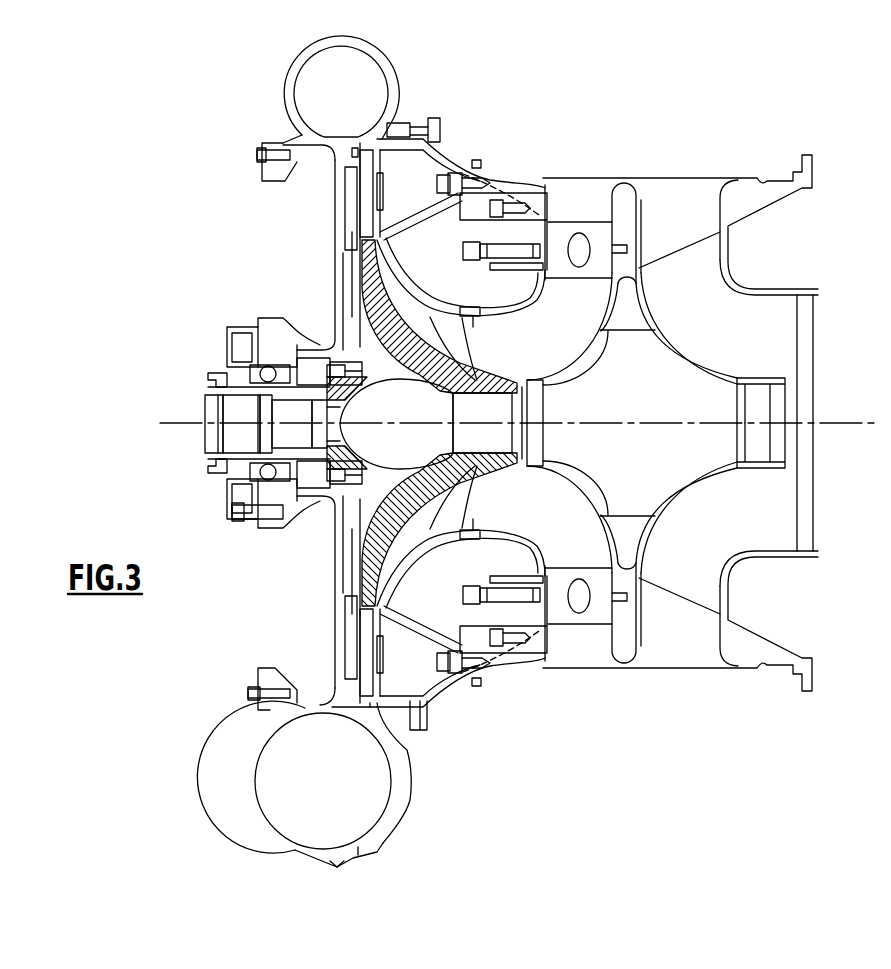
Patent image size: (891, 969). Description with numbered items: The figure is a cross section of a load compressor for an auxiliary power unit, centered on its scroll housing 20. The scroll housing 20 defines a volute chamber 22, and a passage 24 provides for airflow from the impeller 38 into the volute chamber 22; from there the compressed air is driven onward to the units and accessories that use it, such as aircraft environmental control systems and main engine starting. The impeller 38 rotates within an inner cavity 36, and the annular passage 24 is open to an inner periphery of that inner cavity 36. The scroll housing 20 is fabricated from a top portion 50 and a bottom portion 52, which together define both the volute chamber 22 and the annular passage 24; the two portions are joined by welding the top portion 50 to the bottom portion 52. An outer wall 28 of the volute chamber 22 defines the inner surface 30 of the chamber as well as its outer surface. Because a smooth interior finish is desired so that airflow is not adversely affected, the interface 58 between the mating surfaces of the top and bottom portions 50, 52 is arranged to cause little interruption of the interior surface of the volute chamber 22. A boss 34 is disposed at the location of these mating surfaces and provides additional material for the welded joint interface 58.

The scroll housing 20 is at (280, 708).
The volute chamber 22 is at (312, 772).
The passage 24 is at (370, 645).
The outer wall 28 is at (413, 802).
The inner surface 30 is at (393, 793).
The boss 34 is at (394, 843).
The inner cavity 36 is at (348, 558).
The impeller 38 is at (353, 530).
The top portion 50 is at (287, 98).
The bottom portion 52 is at (397, 92).
The interface 58 is at (350, 843).